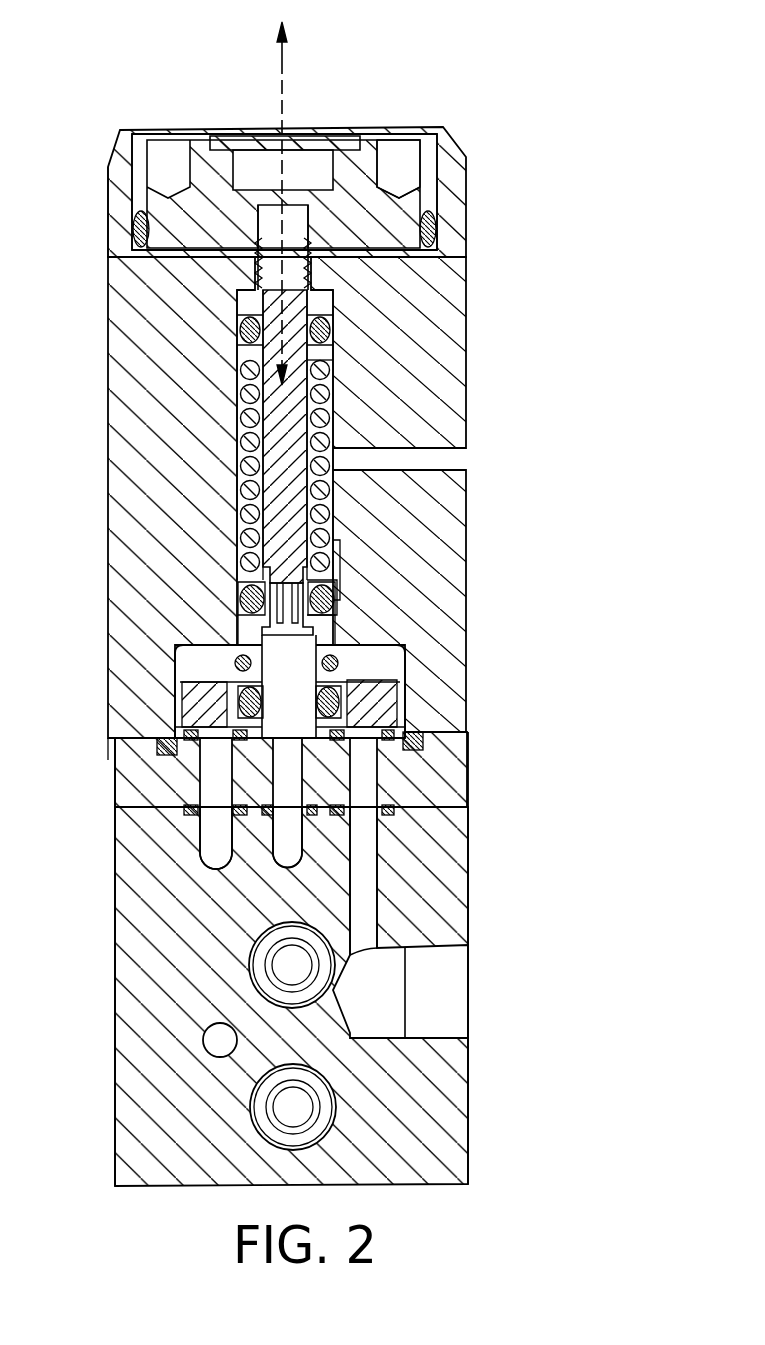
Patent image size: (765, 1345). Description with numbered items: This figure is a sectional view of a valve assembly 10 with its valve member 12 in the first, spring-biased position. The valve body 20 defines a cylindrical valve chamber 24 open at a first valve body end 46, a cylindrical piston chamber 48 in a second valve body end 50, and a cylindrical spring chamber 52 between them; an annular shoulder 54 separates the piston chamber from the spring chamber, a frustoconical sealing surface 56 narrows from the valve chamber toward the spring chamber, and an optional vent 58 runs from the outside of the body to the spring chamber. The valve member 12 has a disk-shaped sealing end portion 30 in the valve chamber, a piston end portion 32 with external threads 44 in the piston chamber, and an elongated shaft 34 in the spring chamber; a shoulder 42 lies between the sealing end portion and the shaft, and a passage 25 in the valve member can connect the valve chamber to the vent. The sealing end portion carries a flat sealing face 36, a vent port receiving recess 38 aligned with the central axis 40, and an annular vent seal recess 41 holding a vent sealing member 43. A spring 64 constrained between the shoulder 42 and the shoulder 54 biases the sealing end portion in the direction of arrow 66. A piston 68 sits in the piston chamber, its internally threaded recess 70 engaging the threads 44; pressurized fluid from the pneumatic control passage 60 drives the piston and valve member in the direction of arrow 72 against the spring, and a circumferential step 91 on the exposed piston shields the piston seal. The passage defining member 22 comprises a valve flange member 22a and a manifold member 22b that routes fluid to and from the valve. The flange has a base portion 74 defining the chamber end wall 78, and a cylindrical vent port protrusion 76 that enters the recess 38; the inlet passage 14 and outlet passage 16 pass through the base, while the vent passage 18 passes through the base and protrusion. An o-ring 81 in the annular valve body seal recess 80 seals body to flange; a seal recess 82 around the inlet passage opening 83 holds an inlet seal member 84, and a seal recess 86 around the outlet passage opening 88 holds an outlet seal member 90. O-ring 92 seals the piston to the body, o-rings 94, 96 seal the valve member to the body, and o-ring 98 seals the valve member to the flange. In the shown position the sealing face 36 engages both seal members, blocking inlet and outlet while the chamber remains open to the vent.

The valve assembly 10 is at (498, 317).
The valve member 12 is at (247, 430).
The inlet passage 14 is at (392, 805).
The outlet passage 16 is at (200, 795).
The vent passage 18 is at (245, 597).
The valve body 20 is at (448, 362).
The passage defining member 22 is at (468, 768).
The valve flange member 22a is at (455, 797).
The manifold member 22b is at (415, 1085).
The valve chamber 24 is at (390, 660).
The passage 25 is at (338, 620).
The sealing end portion 30 is at (387, 698).
The piston end portion 32 is at (258, 226).
The elongated shaft 34 is at (318, 436).
The flat sealing face 36 is at (175, 763).
The vent port receiving recess 38 is at (260, 683).
The central axis 40 is at (285, 112).
The annular vent seal recess 41 is at (240, 662).
The shoulder 42 is at (320, 562).
The vent sealing member 43 is at (403, 648).
The external threads 44 is at (320, 226).
The first valve body end 46 is at (115, 748).
The cylindrical piston chamber 48 is at (432, 257).
The second valve body end 50 is at (120, 205).
The cylindrical spring chamber 52 is at (240, 517).
The annular shoulder 54 is at (245, 356).
The frustoconical sealing surface 56 is at (243, 640).
The vent 58 is at (432, 458).
The pneumatic control passage 60 is at (133, 240).
The spring 64 is at (318, 372).
The arrow 66 is at (320, 325).
The piston 68 is at (432, 190).
The internally threaded recess 70 is at (298, 232).
The arrow 72 is at (285, 68).
The base portion 74 is at (135, 795).
The cylindrical vent port protrusion 76 is at (333, 663).
The end wall 78 is at (172, 722).
The annular valve body seal recess 80 is at (427, 755).
The o-ring 81 is at (427, 730).
The seal recess 82 is at (333, 740).
The inlet passage opening 83 is at (385, 752).
The inlet seal member 84 is at (307, 760).
The seal recess 86 is at (290, 818).
The outlet passage opening 88 is at (222, 748).
The outlet seal member 90 is at (289, 686).
The circumferential step 91 is at (140, 155).
The o-ring 92 is at (430, 230).
The o-ring 94 is at (247, 320).
The o-ring 96 is at (322, 592).
The o-ring 98 is at (235, 688).